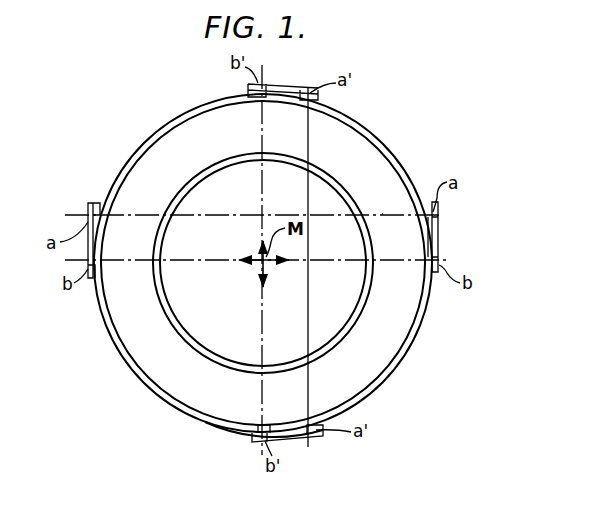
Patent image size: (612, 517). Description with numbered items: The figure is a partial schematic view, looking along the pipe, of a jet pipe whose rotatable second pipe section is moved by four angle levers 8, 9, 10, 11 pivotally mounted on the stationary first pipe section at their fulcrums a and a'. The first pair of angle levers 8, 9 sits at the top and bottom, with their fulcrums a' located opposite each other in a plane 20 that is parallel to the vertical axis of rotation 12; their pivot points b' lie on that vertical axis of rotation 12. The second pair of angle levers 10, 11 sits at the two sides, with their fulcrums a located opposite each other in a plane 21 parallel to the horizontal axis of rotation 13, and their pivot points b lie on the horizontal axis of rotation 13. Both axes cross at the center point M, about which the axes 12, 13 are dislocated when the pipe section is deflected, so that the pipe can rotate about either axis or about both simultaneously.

The angle lever 8 is at (283, 85).
The angle lever 9 is at (287, 438).
The angle lever 10 is at (438, 248).
The angle lever 11 is at (94, 205).
The vertical axis of rotation 12 is at (261, 440).
The horizontal axis of rotation 13 is at (113, 266).
The plane 20 is at (310, 155).
The plane 21 is at (383, 213).